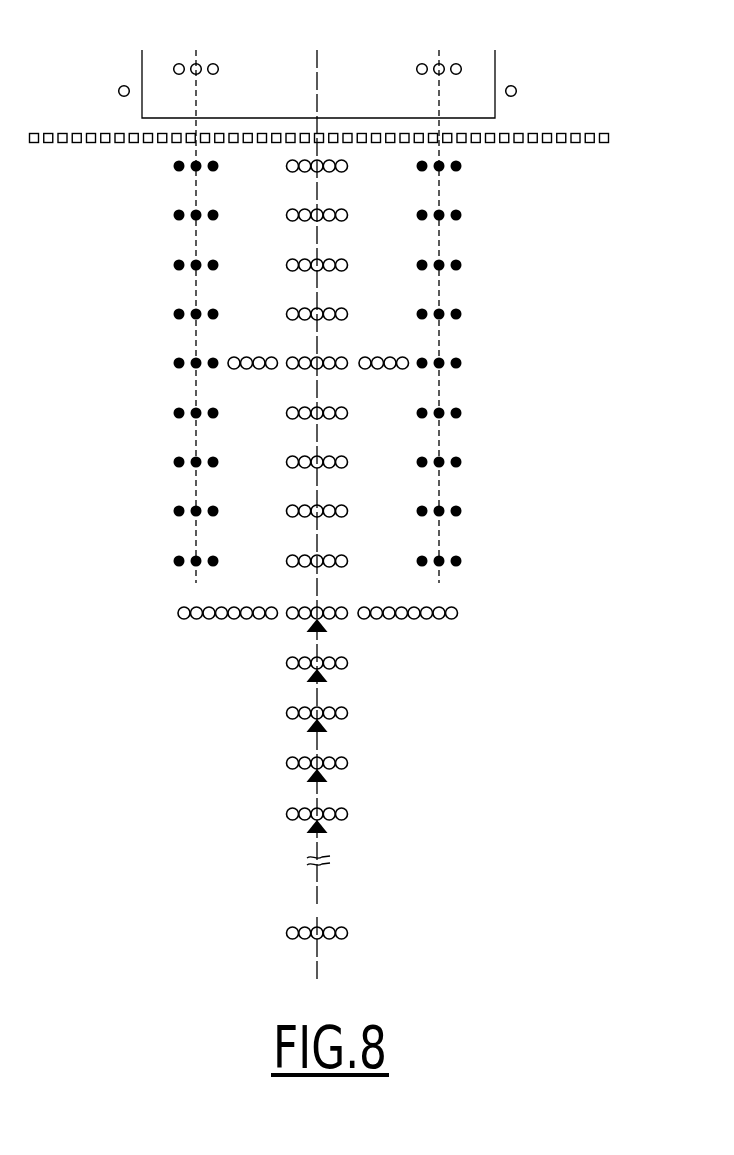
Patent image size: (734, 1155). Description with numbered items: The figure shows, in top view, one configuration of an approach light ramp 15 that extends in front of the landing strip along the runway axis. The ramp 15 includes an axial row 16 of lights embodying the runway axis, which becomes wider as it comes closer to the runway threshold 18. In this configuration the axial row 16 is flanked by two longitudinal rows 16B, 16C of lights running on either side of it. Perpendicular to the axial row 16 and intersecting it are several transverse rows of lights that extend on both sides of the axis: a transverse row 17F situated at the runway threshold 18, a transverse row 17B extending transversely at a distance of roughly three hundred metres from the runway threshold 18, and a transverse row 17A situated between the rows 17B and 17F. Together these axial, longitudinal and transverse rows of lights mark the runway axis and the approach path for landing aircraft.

The approach light ramp 15 is at (605, 103).
The axial row 16 is at (327, 955).
The longitudinal row 16B is at (176, 265).
The longitudinal row 16C is at (461, 265).
The transverse row 17A is at (258, 360).
The transverse row 17B is at (237, 607).
The transverse row 17F is at (370, 128).
The runway threshold 18 is at (283, 128).